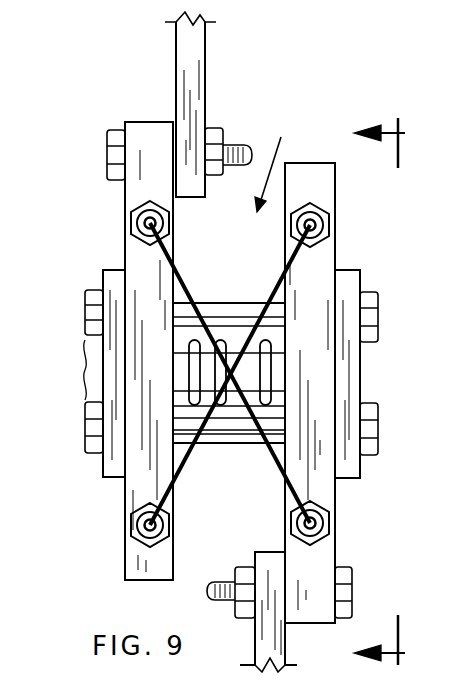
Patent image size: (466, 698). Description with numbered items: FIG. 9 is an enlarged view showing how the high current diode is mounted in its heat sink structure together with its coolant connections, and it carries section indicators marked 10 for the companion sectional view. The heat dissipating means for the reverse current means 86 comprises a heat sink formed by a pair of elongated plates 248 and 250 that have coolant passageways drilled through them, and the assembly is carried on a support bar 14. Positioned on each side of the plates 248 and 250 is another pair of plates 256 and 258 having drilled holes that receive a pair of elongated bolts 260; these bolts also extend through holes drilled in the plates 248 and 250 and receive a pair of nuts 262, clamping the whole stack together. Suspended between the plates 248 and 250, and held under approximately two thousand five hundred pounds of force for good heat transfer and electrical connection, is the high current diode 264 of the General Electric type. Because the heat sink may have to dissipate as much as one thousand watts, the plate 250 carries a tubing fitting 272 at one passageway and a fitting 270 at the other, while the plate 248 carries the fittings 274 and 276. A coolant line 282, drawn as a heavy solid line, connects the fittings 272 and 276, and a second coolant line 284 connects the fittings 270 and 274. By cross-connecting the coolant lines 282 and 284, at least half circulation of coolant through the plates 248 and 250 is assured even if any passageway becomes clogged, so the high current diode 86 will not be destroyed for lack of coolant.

The section line indicator 10 is at (364, 393).
The support bar 14 is at (193, 67).
The reverse current means 86 is at (276, 161).
The elongated plate 248 is at (140, 183).
The elongated plate 250 is at (315, 568).
The plate 256 is at (108, 468).
The plate 258 is at (348, 290).
The elongated bolts 260 is at (385, 405).
The nuts 262 is at (100, 336).
The high current diode 264 is at (226, 322).
The fitting 270 is at (335, 520).
The tubing fitting 272 is at (332, 226).
The fitting 274 is at (135, 241).
The fitting 276 is at (135, 540).
The coolant line 282 is at (272, 292).
The coolant line 284 is at (278, 468).